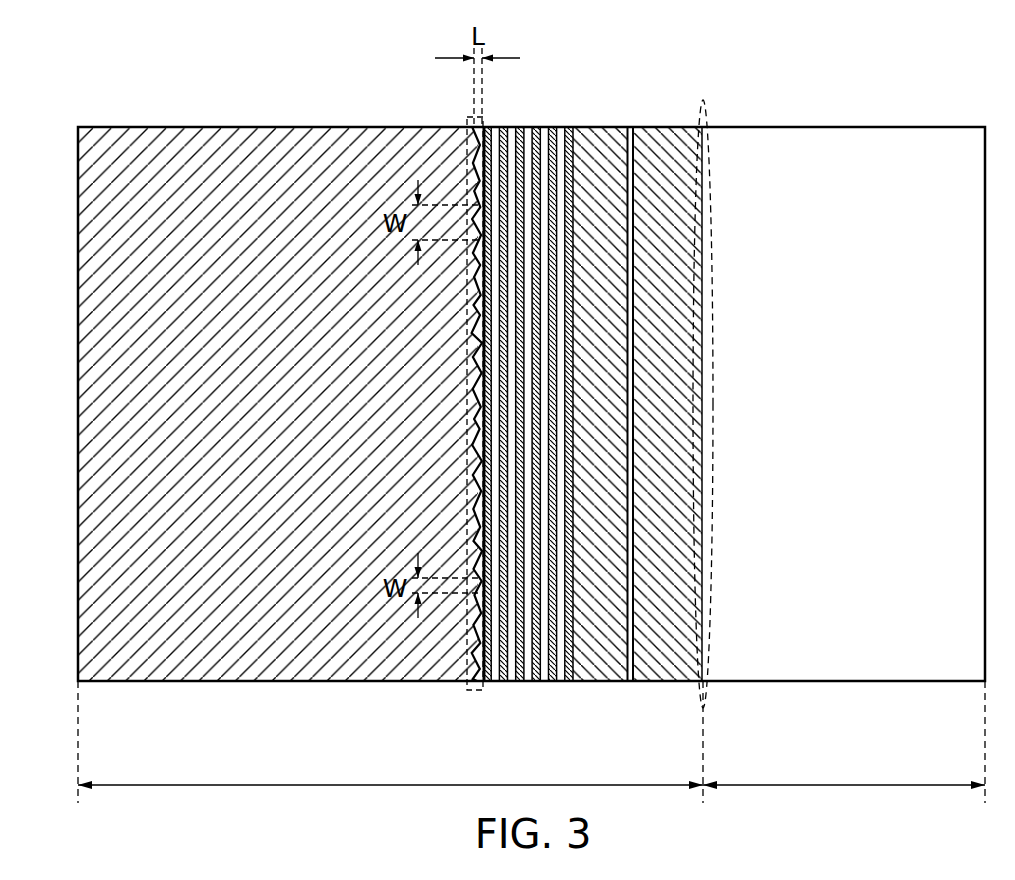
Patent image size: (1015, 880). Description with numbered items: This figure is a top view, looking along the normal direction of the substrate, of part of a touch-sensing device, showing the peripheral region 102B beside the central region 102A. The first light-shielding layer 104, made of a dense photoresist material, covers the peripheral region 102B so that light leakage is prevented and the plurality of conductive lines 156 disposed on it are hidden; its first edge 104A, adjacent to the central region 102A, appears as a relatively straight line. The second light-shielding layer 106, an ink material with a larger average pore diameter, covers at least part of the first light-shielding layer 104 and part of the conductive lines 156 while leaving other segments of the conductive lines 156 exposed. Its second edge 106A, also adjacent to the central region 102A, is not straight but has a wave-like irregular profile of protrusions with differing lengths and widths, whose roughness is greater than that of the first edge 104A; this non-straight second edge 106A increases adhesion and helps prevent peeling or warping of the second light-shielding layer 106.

The second light-shielding layer 106 is at (341, 138).
The second edge 106A is at (467, 120).
The first light-shielding layer 104 is at (597, 142).
The first edge 104A is at (703, 100).
The conductive lines 156 is at (470, 661).
The peripheral region 102B is at (390, 742).
The central region 102A is at (844, 742).